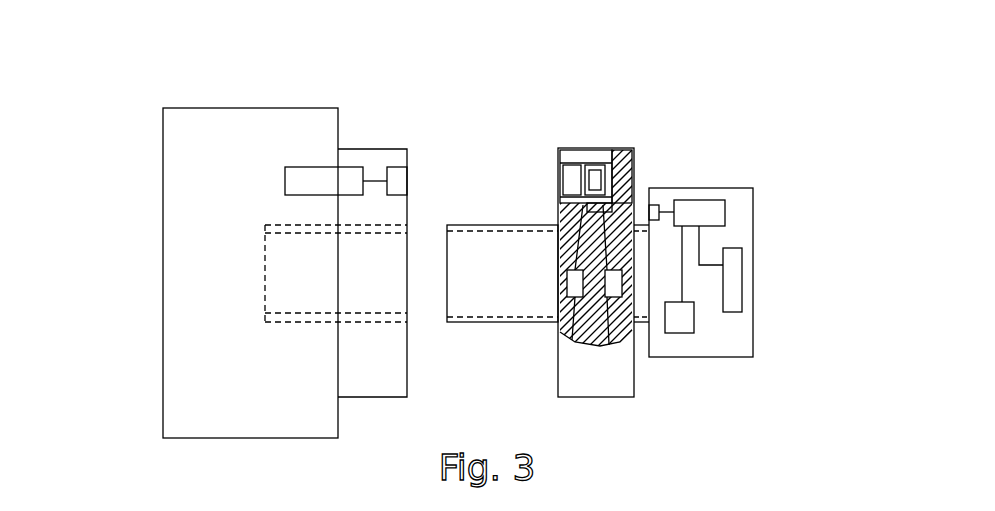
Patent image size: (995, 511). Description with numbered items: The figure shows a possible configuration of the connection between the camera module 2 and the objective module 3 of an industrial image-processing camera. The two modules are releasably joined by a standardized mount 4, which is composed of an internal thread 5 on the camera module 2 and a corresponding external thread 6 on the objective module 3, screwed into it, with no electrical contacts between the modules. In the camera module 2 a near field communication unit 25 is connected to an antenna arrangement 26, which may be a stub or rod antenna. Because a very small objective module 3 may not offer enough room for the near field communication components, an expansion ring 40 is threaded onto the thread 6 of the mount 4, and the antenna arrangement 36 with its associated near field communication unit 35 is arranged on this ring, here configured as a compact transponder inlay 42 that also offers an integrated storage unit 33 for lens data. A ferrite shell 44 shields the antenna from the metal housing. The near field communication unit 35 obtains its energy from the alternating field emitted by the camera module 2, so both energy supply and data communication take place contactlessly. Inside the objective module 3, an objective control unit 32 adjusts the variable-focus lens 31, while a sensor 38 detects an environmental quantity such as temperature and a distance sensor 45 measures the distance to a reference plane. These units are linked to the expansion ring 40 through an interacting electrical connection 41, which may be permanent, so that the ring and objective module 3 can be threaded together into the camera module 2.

The camera module 2 is at (195, 195).
The objective module 3 is at (695, 186).
The mount 4 is at (473, 200).
The internal thread 5 is at (358, 322).
The external thread 6 is at (500, 322).
The near field communication unit 25 is at (308, 168).
The antenna arrangement 26 is at (397, 167).
The variable-focus lens 31 is at (742, 295).
The objective control unit 32 is at (725, 213).
The storage unit 33 is at (612, 335).
The near field communication unit 35 is at (615, 150).
The antenna arrangement 36 is at (565, 183).
The sensor 38 is at (570, 300).
The expansion ring 40 is at (577, 150).
The electrical connection 41 is at (617, 212).
The transponder inlay 42 is at (597, 150).
The ferrite shell 44 is at (565, 160).
The distance sensor 45 is at (678, 333).